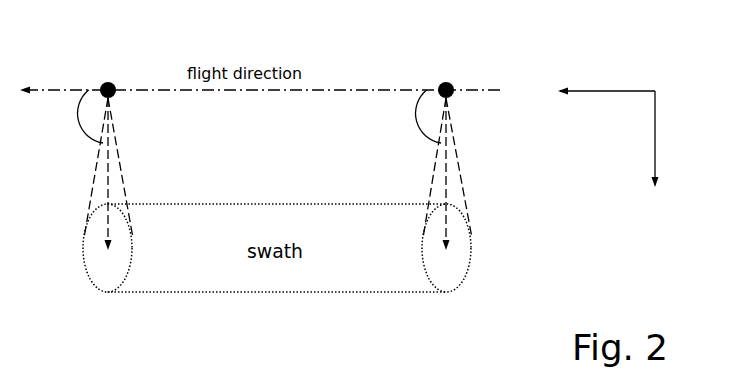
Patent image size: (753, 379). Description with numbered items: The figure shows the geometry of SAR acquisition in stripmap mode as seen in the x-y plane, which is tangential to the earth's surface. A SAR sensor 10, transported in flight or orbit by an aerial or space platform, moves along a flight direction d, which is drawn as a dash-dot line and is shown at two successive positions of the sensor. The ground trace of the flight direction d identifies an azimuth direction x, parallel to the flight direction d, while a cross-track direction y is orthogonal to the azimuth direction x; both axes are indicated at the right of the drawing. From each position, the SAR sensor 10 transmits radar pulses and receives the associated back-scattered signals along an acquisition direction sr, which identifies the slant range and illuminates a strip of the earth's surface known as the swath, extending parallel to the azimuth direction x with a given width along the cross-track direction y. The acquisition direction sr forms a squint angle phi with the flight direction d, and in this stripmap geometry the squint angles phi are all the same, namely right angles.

The SAR sensor 10 is at (115, 93).
The flight direction d is at (261, 100).
The squint angle phi is at (269, 164).
The acquisition direction sr is at (268, 174).
The azimuth direction x is at (606, 102).
The cross-track direction y is at (645, 144).